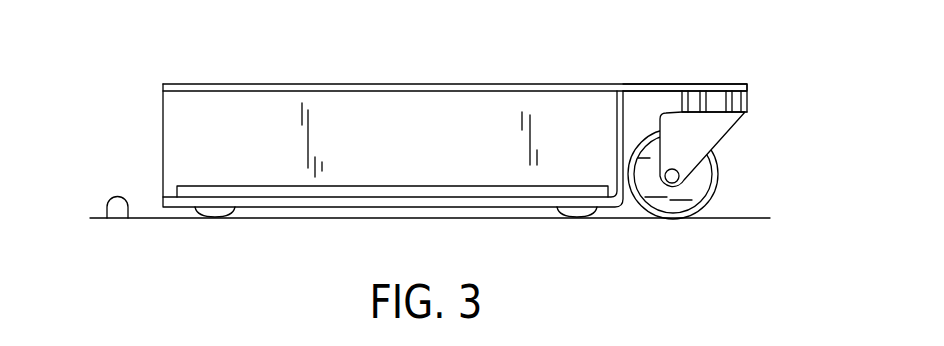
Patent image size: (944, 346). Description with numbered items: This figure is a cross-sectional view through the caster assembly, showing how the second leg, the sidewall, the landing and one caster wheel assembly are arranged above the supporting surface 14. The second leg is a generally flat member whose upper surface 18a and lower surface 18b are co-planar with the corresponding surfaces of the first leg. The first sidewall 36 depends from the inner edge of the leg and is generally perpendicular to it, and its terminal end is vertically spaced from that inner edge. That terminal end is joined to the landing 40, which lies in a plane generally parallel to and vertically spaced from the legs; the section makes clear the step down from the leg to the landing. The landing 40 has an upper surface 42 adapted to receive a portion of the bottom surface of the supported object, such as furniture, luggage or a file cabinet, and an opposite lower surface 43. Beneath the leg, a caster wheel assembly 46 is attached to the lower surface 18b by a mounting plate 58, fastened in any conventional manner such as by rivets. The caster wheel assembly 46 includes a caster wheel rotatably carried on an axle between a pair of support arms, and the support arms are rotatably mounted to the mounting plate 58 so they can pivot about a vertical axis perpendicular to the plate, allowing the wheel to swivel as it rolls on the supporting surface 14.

The supporting surface 14 is at (107, 218).
The first sidewall 36 is at (218, 118).
The upper surface 42 is at (280, 187).
The landing 40 is at (214, 187).
The lower surface 43 is at (302, 214).
The upper surface 18a is at (683, 85).
The lower surface 18b is at (707, 97).
The mounting plate 58 is at (746, 107).
The caster wheel assembly 46 is at (681, 219).